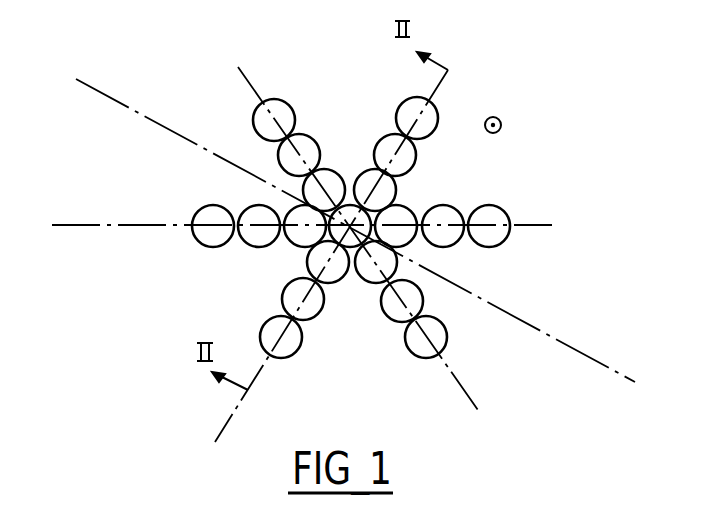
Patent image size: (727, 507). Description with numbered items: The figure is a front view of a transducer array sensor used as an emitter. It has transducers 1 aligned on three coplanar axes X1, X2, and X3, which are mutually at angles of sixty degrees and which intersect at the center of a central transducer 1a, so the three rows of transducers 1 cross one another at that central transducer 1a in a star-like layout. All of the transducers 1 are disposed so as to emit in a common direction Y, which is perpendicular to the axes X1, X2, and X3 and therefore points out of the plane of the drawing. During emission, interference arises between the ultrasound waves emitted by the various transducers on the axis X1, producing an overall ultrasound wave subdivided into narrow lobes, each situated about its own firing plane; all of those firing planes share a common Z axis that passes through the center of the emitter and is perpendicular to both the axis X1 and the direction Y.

The transducer 1 is at (496, 232).
The central transducer 1a is at (384, 212).
The first axis X1 is at (226, 428).
The second axis X2 is at (61, 228).
The third axis X3 is at (240, 77).
The emission direction Y is at (505, 127).
The Z axis Z is at (622, 372).